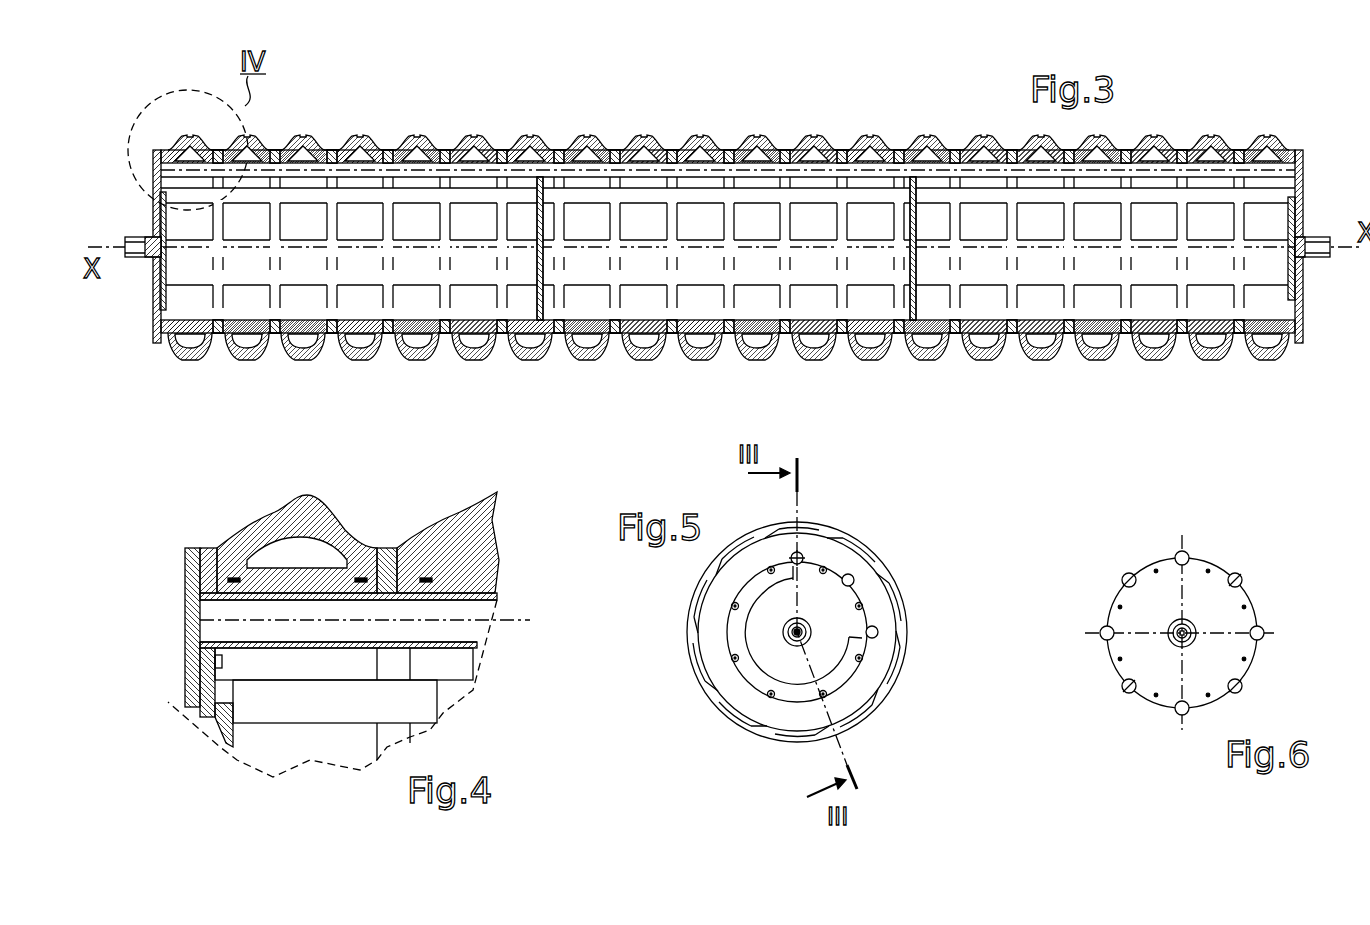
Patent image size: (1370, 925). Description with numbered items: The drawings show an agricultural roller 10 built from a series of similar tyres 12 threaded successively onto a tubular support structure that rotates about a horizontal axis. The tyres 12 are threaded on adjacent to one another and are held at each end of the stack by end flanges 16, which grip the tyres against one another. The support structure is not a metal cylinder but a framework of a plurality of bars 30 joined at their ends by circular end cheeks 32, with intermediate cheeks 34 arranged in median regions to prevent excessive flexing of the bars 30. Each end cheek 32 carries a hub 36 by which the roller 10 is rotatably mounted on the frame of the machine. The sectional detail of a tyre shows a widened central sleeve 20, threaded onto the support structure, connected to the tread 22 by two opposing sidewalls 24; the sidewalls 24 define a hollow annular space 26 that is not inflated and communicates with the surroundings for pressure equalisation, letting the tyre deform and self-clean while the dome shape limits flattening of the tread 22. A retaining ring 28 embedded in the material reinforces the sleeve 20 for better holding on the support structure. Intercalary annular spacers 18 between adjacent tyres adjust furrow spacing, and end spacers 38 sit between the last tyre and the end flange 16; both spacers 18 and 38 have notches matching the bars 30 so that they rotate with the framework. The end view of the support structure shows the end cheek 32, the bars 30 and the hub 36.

In FIG. 3, the roller 10 is at (783, 131).
In FIG. 4, the tyres 12 is at (218, 548).
In FIG. 5, the tyres 12 is at (822, 550).
In FIG. 3, the end flanges 16 is at (155, 190).
In FIG. 4, the end flanges 16 is at (190, 660).
In FIG. 5, the end flanges 16 is at (866, 688).
In FIG. 4, the intercalary annular spacers 18 is at (390, 548).
In FIG. 4, the central sleeve 20 is at (340, 595).
In FIG. 4, the tread 22 is at (305, 495).
In FIG. 4, the sidewalls 24 is at (268, 518).
In FIG. 4, the annular space 26 is at (312, 561).
In FIG. 4, the retaining ring 28 is at (255, 595).
In FIG. 3, the bars 30 is at (411, 140).
In FIG. 4, the bars 30 is at (470, 652).
In FIG. 5, the bars 30 is at (854, 580).
In FIG. 6, the bars 30 is at (1188, 555).
In FIG. 3, the circular end cheeks 32 is at (160, 226).
In FIG. 4, the circular end cheeks 32 is at (210, 725).
In FIG. 5, the circular end cheeks 32 is at (878, 632).
In FIG. 6, the circular end cheeks 32 is at (1255, 616).
In FIG. 3, the intermediate cheeks 34 is at (538, 320).
In FIG. 3, the hub 36 is at (140, 260).
In FIG. 5, the hub 36 is at (792, 632).
In FIG. 4, the end spacers 38 is at (190, 560).
In FIG. 5, the end spacers 38 is at (797, 552).